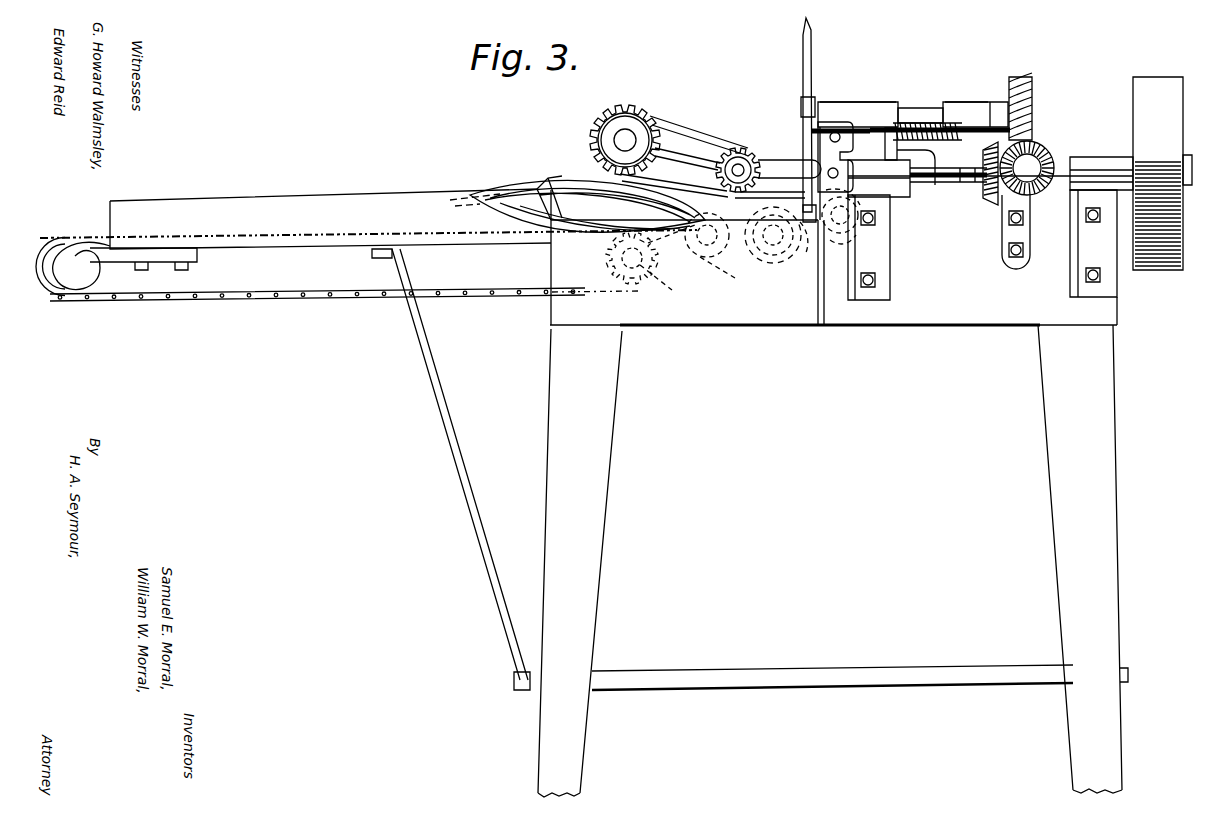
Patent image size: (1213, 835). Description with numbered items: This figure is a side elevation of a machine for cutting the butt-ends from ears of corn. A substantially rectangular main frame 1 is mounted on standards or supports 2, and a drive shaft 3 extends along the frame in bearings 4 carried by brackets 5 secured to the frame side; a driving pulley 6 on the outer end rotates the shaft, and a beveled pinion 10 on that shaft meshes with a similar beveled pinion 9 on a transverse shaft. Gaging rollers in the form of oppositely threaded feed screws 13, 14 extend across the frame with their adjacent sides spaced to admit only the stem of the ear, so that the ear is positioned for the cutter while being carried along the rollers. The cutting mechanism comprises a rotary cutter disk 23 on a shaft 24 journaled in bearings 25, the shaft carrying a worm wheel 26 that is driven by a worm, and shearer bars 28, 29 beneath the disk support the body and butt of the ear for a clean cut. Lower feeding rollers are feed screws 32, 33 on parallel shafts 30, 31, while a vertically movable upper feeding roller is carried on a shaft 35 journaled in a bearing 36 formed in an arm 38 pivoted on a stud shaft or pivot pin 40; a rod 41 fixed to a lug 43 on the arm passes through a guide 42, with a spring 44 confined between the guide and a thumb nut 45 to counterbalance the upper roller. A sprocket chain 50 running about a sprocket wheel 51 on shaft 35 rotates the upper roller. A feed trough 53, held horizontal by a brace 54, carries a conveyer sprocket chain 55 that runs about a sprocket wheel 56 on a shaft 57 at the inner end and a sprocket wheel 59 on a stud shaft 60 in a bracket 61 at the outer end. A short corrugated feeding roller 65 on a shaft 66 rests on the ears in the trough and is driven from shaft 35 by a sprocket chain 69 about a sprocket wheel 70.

The main frame 1 is at (980, 317).
The standards or supports 2 is at (620, 495).
The drive shaft 3 is at (965, 184).
The bearings 4 is at (1100, 155).
The brackets 5 is at (890, 268).
The driving pulley 6 is at (1150, 83).
The beveled pinion 9 is at (1040, 148).
The beveled pinion 10 is at (985, 205).
The feed screw (upper gaging roller) 13 is at (879, 178).
The feed screw (lower gaging roller) 14 is at (815, 270).
The rotary cutter disk 23 is at (815, 60).
The shaft 24 is at (925, 108).
The bearings 25 is at (880, 100).
The worm wheel 26 is at (1034, 110).
The shearer bar 28 is at (790, 200).
The shearer bar 29 is at (841, 216).
The shaft (lower feeding roller) 30 is at (707, 245).
The shaft (lower feeding roller) 31 is at (773, 245).
The feed screw (lower feeding roller) 32 is at (700, 260).
The feed screw (lower feeding roller) 33 is at (801, 250).
The shaft (upper feeding roller) 35 is at (738, 190).
The bearing 36 is at (700, 163).
The arm 38 is at (778, 158).
The stud shaft or pivot pin 40 is at (880, 152).
The rod 41 is at (836, 115).
The guide or apertured lug 42 is at (928, 186).
The lug or arm 43 is at (858, 114).
The spring 44 is at (940, 145).
The thumb nut 45 is at (975, 114).
The sprocket chain 50 is at (800, 112).
The sprocket wheel 51 is at (738, 166).
The feed trough 53 is at (388, 178).
The brace 54 is at (470, 392).
The sprocket chain (conveyer belt) 55 is at (250, 292).
The sprocket wheel 56 is at (625, 282).
The shaft 57 is at (661, 282).
The sprocket wheel 59 is at (78, 290).
The stud shaft 60 is at (606, 127).
The bracket 61 is at (165, 256).
The corrugated feeding roller 65 is at (600, 110).
The shaft 66 is at (616, 145).
The sprocket chain 69 is at (705, 130).
The sprocket wheel 70 is at (596, 138).